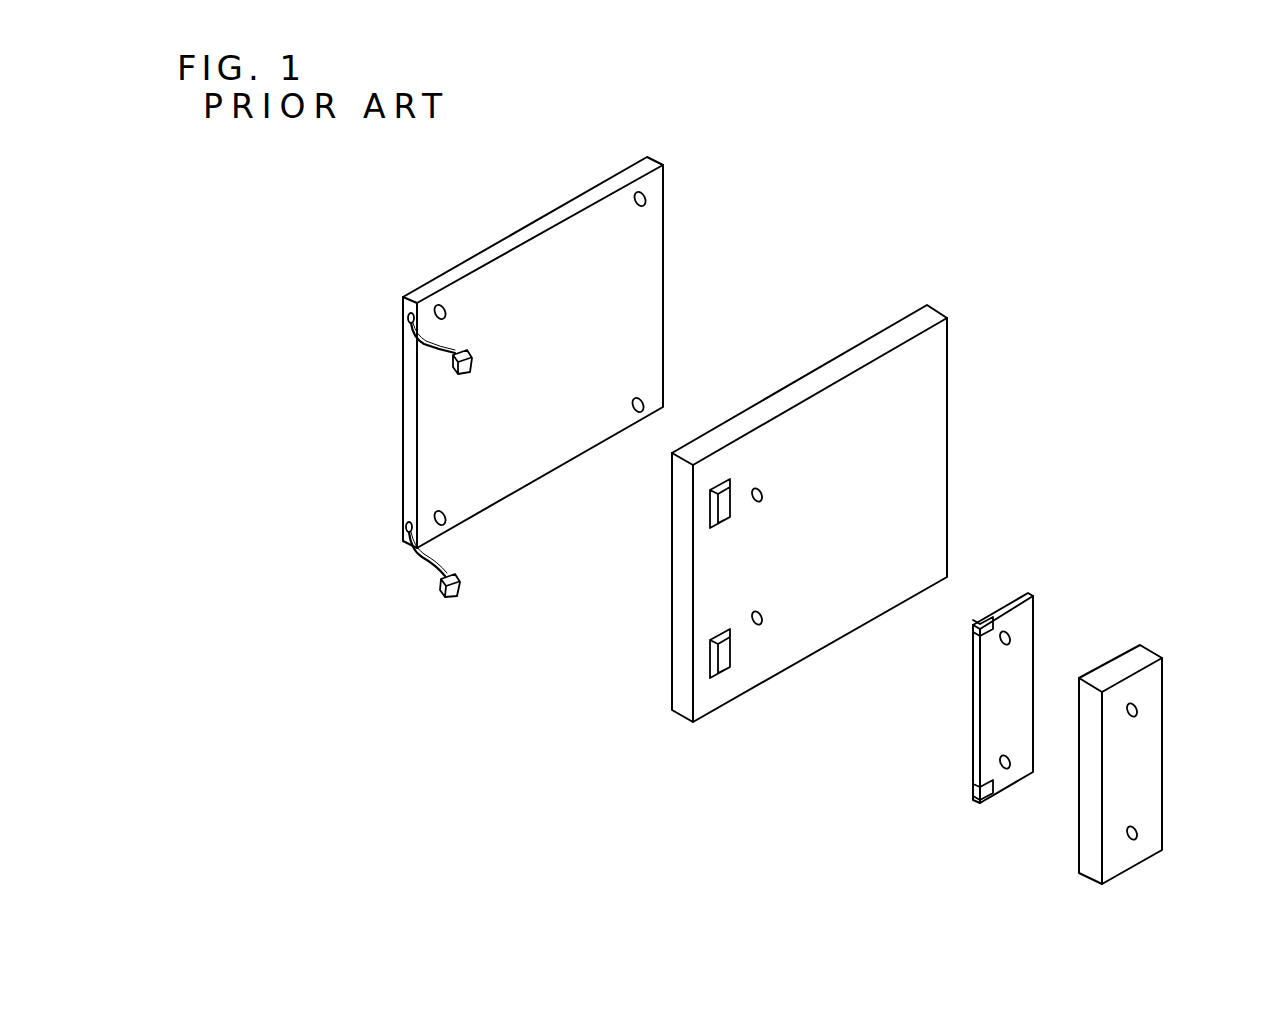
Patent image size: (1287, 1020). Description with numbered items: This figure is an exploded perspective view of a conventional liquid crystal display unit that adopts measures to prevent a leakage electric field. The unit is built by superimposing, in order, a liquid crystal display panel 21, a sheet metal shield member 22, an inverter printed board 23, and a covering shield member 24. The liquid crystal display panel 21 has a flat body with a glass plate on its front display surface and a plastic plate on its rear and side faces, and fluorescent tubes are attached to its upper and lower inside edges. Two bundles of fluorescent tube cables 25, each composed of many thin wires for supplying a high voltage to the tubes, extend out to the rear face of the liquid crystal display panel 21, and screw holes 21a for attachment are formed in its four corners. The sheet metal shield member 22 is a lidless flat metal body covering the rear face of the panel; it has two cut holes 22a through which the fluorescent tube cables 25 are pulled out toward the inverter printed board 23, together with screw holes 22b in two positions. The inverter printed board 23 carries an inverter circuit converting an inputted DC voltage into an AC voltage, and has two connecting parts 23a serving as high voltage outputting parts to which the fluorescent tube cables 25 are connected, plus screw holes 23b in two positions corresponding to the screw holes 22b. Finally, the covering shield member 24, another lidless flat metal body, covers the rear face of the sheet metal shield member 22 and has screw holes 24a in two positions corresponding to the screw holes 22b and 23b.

The liquid crystal display panel 21 is at (490, 246).
The screw holes 21a is at (645, 201).
The sheet metal shield member 22 is at (952, 369).
The cut holes 22a is at (710, 496).
The screw holes 22b is at (758, 505).
The inverter printed board 23 is at (1036, 621).
The connecting parts 23a is at (975, 628).
The screw holes 23b is at (1009, 631).
The covering shield member 24 is at (1157, 649).
The screw holes 24a is at (1137, 710).
The fluorescent tube cables 25 is at (440, 352).